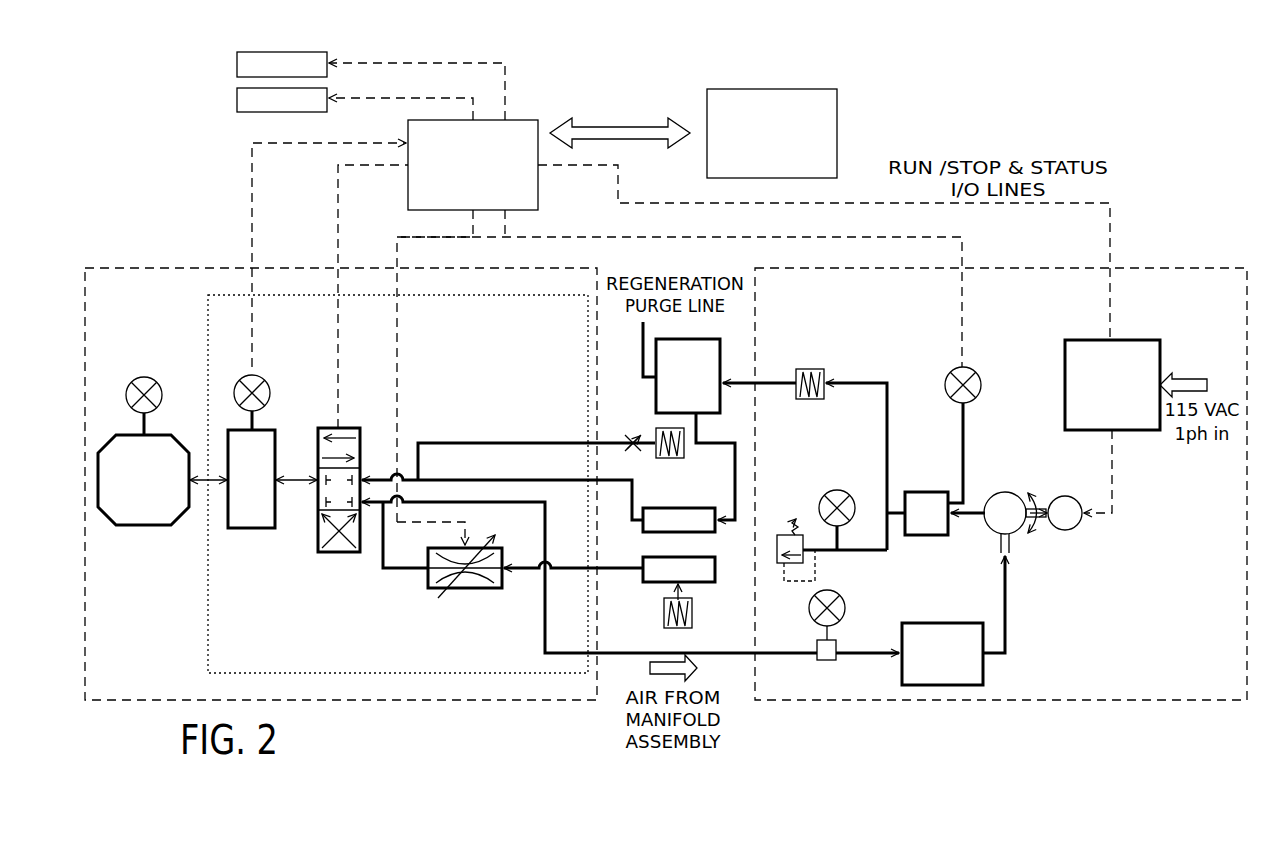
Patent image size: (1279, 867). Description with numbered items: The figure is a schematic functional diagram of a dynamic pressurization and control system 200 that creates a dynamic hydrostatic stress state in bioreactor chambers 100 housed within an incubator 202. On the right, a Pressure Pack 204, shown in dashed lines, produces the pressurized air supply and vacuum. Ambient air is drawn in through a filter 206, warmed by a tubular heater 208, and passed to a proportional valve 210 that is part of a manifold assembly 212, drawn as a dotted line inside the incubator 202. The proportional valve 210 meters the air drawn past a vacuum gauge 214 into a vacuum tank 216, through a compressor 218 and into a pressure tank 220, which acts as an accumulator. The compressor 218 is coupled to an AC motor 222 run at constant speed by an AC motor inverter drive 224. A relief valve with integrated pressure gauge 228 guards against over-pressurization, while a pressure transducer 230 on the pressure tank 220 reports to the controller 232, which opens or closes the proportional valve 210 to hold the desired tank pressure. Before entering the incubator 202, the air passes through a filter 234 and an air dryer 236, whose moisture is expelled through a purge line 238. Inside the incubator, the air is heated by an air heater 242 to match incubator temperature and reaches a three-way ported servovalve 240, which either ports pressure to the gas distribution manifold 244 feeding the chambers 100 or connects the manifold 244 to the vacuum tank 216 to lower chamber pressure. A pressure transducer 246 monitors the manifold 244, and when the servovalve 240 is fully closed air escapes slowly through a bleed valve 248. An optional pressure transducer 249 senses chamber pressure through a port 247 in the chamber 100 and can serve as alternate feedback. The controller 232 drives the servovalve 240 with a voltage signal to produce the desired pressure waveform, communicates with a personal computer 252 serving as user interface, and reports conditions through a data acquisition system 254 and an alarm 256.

The chambers 100 is at (148, 526).
The dynamic pressurization and control system 200 is at (1030, 90).
The incubator 202 is at (207, 268).
The Pressure Pack 204 is at (874, 268).
The filter 206 is at (690, 626).
The heater 208 is at (660, 583).
The proportional valve 210 is at (471, 589).
The manifold assembly 212 is at (207, 656).
The vacuum gauge 214 is at (828, 661).
The vacuum tank 216 is at (984, 675).
The compressor 218 is at (1008, 492).
The pressure tank 220 is at (925, 536).
The AC motor 222 is at (1065, 531).
The AC motor inverter drive 224 is at (1090, 340).
The pressure gauge 228 is at (834, 490).
The pressure transducer 230 is at (975, 371).
The controller 232 is at (538, 190).
The filter 234 is at (811, 370).
The air dryer 236 is at (720, 397).
The purge line 238 is at (642, 370).
The three-way ported servovalve 240 is at (340, 553).
The air heater 242 is at (681, 508).
The gas distribution manifold 244 is at (253, 529).
The pressure transducer 246 is at (265, 381).
The port 247 is at (147, 425).
The bleed valve 248 is at (632, 440).
The optional pressure transducer 249 is at (131, 384).
The personal computer 252 is at (775, 89).
The data acquisition system 254 is at (237, 66).
The alarm 256 is at (237, 101).